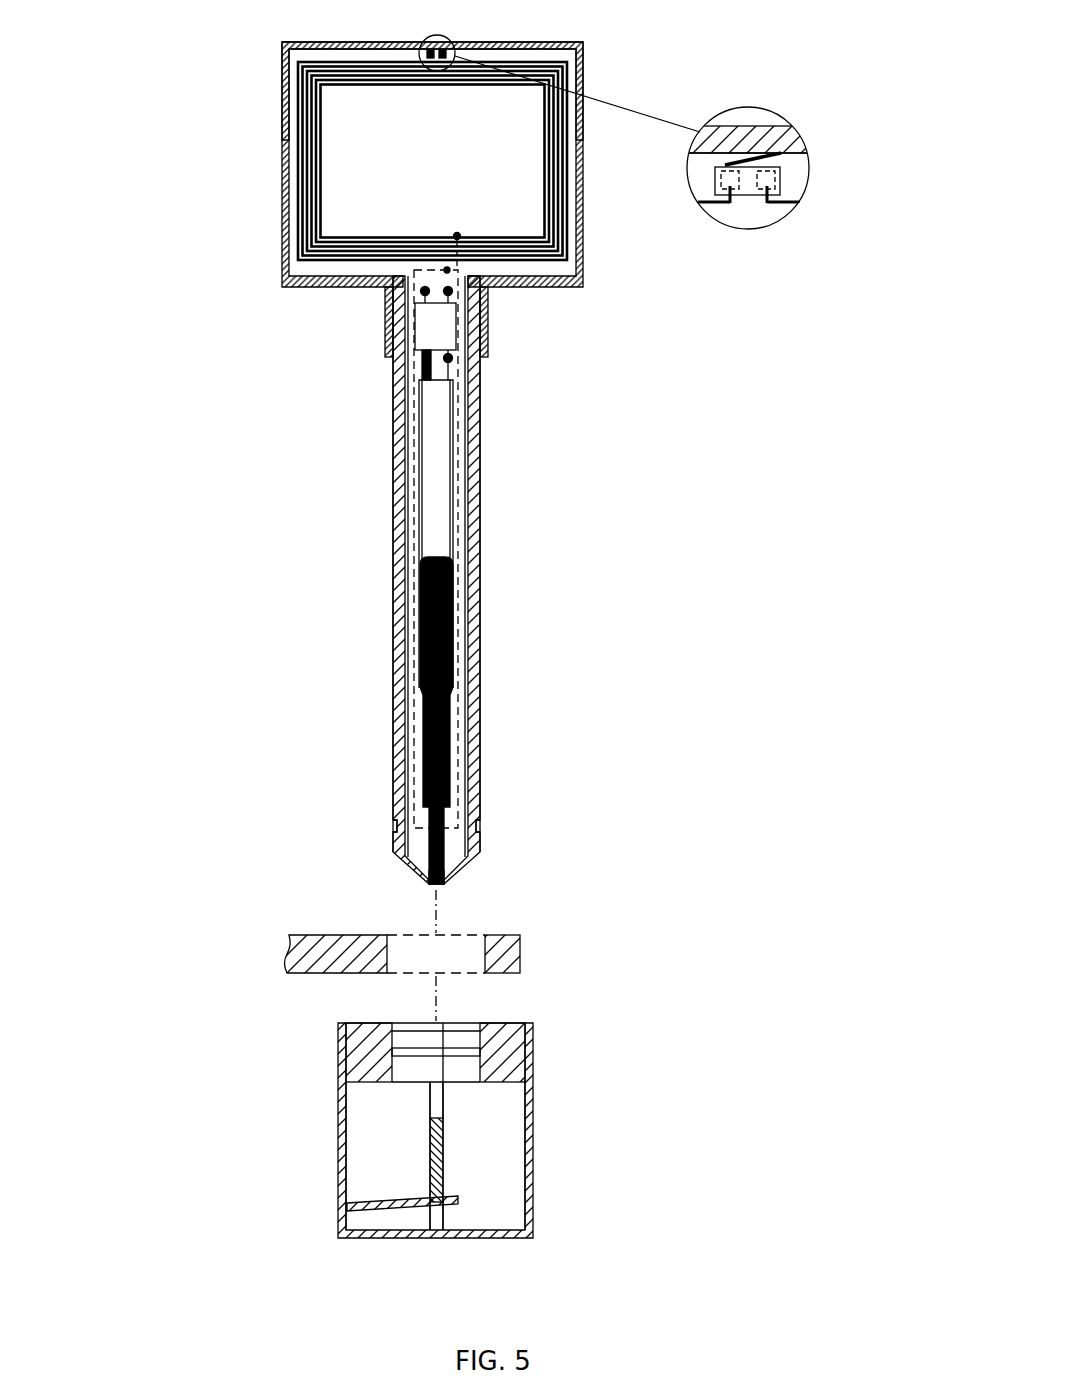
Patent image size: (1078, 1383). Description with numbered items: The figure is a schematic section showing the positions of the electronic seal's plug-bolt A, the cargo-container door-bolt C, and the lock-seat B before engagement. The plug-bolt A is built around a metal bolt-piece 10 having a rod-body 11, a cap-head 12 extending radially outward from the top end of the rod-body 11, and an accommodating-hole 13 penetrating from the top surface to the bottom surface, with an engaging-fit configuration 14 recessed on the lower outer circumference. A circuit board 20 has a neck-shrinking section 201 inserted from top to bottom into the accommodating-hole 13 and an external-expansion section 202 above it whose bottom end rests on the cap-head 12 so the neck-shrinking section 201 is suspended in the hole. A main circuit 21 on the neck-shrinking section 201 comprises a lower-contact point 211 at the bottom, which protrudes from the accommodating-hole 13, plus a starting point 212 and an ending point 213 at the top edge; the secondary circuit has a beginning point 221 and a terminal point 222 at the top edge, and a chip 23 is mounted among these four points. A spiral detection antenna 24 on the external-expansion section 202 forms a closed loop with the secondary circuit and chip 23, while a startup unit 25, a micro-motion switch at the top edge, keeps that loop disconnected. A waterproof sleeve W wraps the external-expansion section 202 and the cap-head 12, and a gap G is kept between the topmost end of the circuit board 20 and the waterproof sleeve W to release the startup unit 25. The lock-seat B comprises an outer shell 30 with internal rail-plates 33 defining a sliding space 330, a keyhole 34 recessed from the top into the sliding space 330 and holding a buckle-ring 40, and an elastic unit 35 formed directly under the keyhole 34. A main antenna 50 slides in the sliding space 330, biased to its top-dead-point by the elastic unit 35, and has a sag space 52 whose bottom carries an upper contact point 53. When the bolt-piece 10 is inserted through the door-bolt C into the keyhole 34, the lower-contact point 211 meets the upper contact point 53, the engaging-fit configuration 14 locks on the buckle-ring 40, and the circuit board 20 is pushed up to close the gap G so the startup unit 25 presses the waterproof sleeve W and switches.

The bolt-piece 10 is at (528, 580).
The rod-body 11 is at (499, 580).
The cap-head 12 is at (303, 273).
The accommodating-hole 13 is at (408, 727).
The engaging-fit configuration 14 is at (473, 825).
The circuit board 20 is at (398, 500).
The neck-shrinking section 201 is at (470, 447).
The external-expansion section 202 is at (282, 150).
The main circuit 21 is at (420, 535).
The lower-contact point 211 is at (433, 888).
The starting point 212 is at (428, 358).
The ending point 213 is at (452, 358).
The beginning point 221 is at (425, 292).
The terminal point 222 is at (452, 292).
The chip 23 is at (432, 332).
The detection antenna 24 is at (787, 203).
The startup unit 25 is at (427, 40).
The outer shell 30 is at (488, 1238).
The rail-plates 33 is at (373, 1160).
The sliding space 330 is at (437, 1217).
The keyhole 34 is at (470, 1027).
The elastic unit 35 is at (387, 1210).
The buckle-ring 40 is at (360, 1060).
The main antenna 50 is at (443, 1178).
The sag space 52 is at (433, 1107).
The upper contact point 53 is at (433, 1117).
The plug-bolt A is at (492, 500).
The lock-seat B is at (454, 1148).
The door-bolt C is at (520, 937).
The gap G is at (715, 157).
The waterproof sleeve W is at (282, 63).